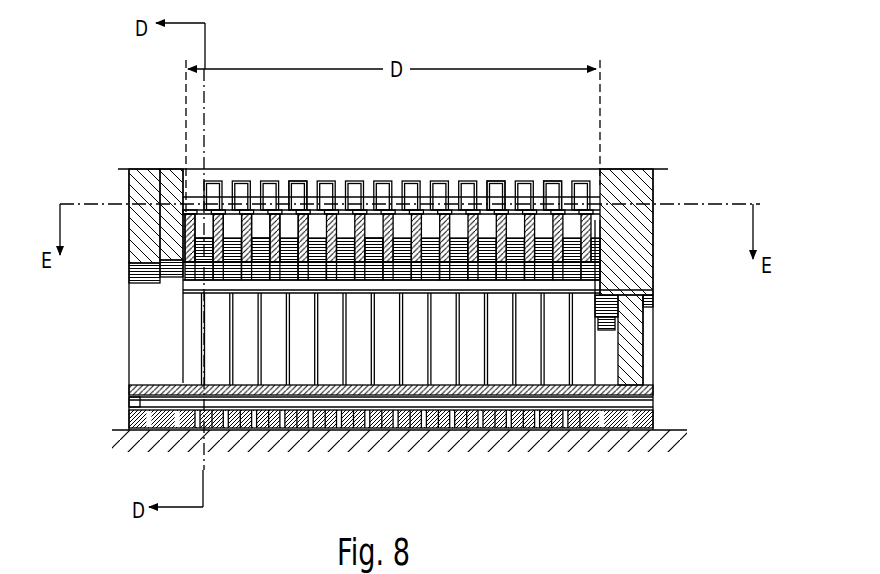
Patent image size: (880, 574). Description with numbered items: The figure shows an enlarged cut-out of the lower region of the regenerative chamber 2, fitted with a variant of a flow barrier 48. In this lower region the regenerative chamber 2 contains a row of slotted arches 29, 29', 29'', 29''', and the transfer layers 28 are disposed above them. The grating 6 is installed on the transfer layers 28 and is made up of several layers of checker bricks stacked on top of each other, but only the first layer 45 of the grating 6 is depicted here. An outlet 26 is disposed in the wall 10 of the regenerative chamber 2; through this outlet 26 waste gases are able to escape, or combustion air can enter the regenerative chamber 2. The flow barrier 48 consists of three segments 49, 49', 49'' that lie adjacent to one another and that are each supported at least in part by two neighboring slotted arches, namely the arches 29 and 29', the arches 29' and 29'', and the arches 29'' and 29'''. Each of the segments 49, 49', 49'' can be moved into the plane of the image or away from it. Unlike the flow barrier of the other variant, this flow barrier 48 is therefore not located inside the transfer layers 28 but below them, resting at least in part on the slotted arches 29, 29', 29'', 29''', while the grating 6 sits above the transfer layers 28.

The regenerative chamber 2 is at (111, 256).
The grating 6 is at (504, 176).
The wall 10 is at (658, 277).
The outlet 26 is at (129, 355).
The transfer layers 28 is at (370, 212).
The slotted arch 29 is at (166, 185).
The slotted arch 29' is at (222, 191).
The slotted arch 29'' is at (264, 193).
The slotted arch 29''' is at (303, 193).
The first layer 45 is at (563, 180).
The flow barrier 48 is at (302, 196).
The segment 49 is at (187, 193).
The segment 49' is at (242, 175).
The segment 49'' is at (285, 173).